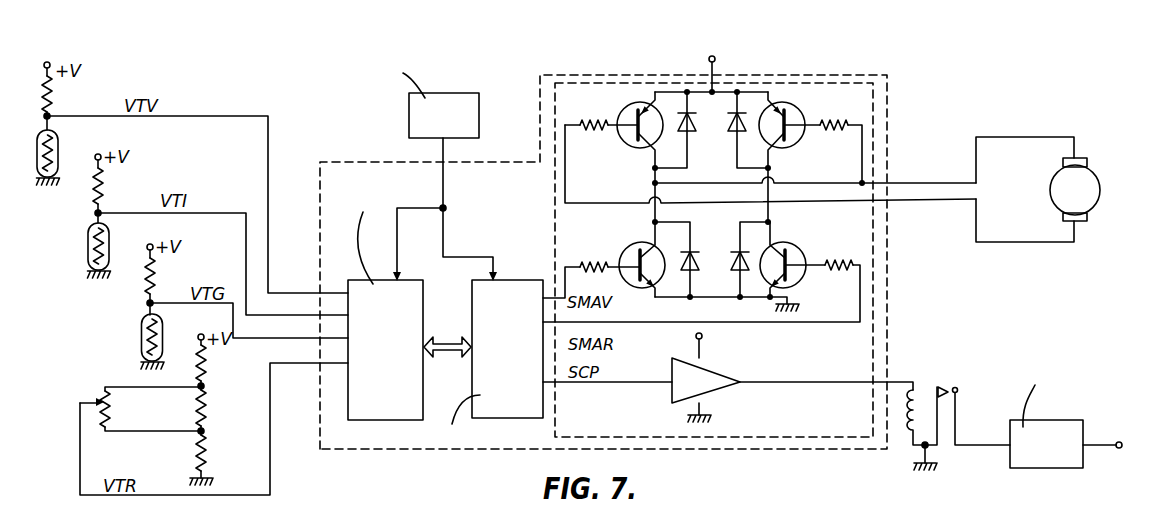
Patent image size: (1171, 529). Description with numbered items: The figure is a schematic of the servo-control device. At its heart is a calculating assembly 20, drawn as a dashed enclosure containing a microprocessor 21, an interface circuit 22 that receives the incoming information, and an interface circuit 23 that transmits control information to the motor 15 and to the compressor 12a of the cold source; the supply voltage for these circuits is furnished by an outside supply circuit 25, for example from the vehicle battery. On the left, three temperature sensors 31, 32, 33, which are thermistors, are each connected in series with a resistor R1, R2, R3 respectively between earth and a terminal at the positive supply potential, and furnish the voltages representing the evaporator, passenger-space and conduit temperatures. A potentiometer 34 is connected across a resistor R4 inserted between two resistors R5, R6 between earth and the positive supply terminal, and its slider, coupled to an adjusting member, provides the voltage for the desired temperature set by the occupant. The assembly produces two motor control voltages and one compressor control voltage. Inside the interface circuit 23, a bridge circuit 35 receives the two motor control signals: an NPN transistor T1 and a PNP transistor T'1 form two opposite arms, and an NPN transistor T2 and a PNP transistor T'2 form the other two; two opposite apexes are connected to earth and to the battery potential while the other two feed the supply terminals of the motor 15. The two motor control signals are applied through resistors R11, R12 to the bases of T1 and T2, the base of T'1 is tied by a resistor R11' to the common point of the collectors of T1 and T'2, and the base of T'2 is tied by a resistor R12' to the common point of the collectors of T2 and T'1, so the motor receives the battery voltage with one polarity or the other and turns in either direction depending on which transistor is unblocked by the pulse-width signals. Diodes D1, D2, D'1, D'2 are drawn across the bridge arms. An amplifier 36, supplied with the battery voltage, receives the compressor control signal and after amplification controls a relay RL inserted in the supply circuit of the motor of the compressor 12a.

The compressor 12a is at (1037, 420).
The motor 15 is at (1050, 188).
The calculating assembly 20 is at (425, 455).
The microprocessor 21 is at (525, 365).
The interface circuit 22 is at (399, 365).
The interface circuit 23 is at (790, 440).
The outside supply circuit 25 is at (457, 134).
The temperature sensor 31 is at (37, 158).
The temperature sensor 32 is at (88, 252).
The temperature sensor 33 is at (142, 340).
The potentiometer 34 is at (92, 384).
The bridge circuit 35 is at (766, 184).
The amplifier 36 is at (722, 392).
The resistor R1 is at (60, 94).
The resistor R2 is at (110, 186).
The resistor R3 is at (163, 276).
The resistor R4 is at (215, 408).
The resistor R5 is at (215, 363).
The resistor R6 is at (215, 453).
The resistor R11 is at (582, 253).
The resistor R12 is at (836, 287).
The resistor R11' is at (823, 151).
The resistor R12' is at (601, 145).
The transistor T1 is at (633, 243).
The transistor T2 is at (803, 248).
The transistor T'1 is at (797, 157).
The transistor T'2 is at (623, 157).
The diode D1 is at (710, 262).
The diode D2 is at (727, 257).
The diode D'1 is at (783, 113).
The diode D'2 is at (667, 113).
The relay RL is at (937, 371).